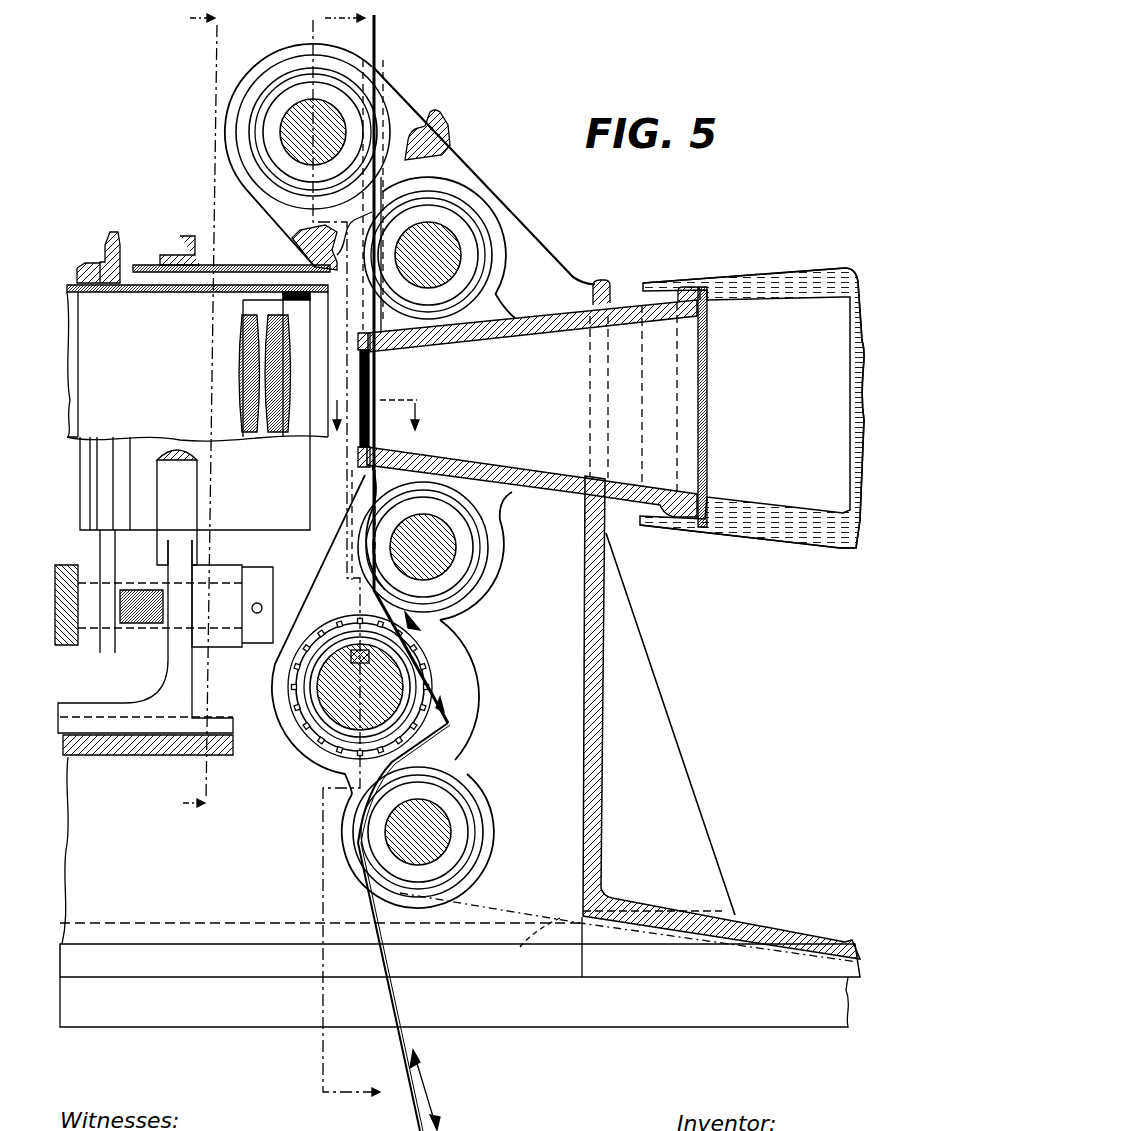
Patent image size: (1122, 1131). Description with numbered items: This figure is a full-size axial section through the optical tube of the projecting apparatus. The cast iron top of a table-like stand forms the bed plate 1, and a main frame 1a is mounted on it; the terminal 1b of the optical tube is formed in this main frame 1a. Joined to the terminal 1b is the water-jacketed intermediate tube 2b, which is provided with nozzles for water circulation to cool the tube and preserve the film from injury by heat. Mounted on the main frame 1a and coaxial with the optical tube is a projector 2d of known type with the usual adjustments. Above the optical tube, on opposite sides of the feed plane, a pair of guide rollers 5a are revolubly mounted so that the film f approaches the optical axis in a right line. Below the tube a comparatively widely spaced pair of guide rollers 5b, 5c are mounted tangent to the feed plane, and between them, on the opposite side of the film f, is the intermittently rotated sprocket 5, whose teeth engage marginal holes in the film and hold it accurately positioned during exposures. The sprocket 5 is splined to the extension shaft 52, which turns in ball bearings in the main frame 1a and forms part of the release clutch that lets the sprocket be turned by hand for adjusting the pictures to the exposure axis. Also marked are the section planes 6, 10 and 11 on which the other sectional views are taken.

The bed plate 1 is at (160, 942).
The main frame 1a is at (721, 717).
The terminal 1b is at (388, 292).
The water-jacketed intermediate tube 2b is at (752, 408).
The projector 2d is at (192, 510).
The sprocket 5 is at (307, 730).
The guide rollers 5a is at (263, 122).
The guide roller 5b is at (478, 548).
The guide roller 5c is at (478, 838).
The extension shaft 52 is at (380, 697).
The section plane 6- 6 is at (342, 561).
The section plane 10- 10 is at (182, 407).
The section plane 11- 11 is at (379, 400).
The film f is at (377, 45).